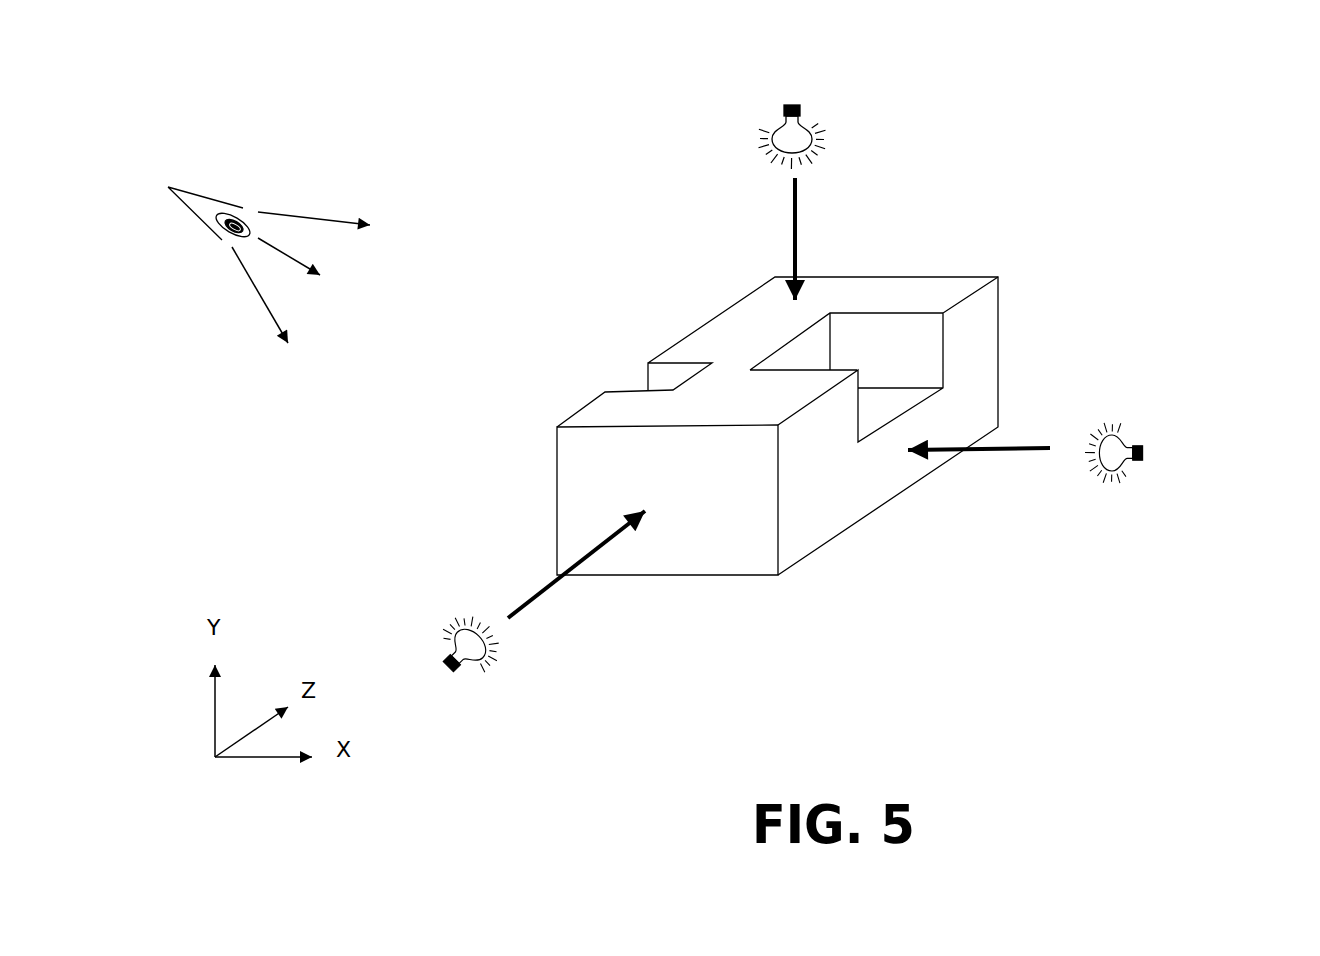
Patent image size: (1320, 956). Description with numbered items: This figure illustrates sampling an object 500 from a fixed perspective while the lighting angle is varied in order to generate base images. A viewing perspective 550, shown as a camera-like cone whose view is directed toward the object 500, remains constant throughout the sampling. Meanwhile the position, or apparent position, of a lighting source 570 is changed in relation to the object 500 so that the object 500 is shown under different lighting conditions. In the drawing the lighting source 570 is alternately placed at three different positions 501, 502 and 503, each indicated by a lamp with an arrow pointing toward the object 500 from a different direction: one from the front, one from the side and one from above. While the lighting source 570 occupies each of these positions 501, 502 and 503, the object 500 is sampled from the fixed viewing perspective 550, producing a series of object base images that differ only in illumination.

The object 500 is at (961, 244).
The first lighting position 501 is at (463, 608).
The second lighting position 502 is at (1152, 415).
The third lighting position 503 is at (808, 83).
The viewing perspective 550 is at (222, 183).
The lighting source 570 is at (830, 364).